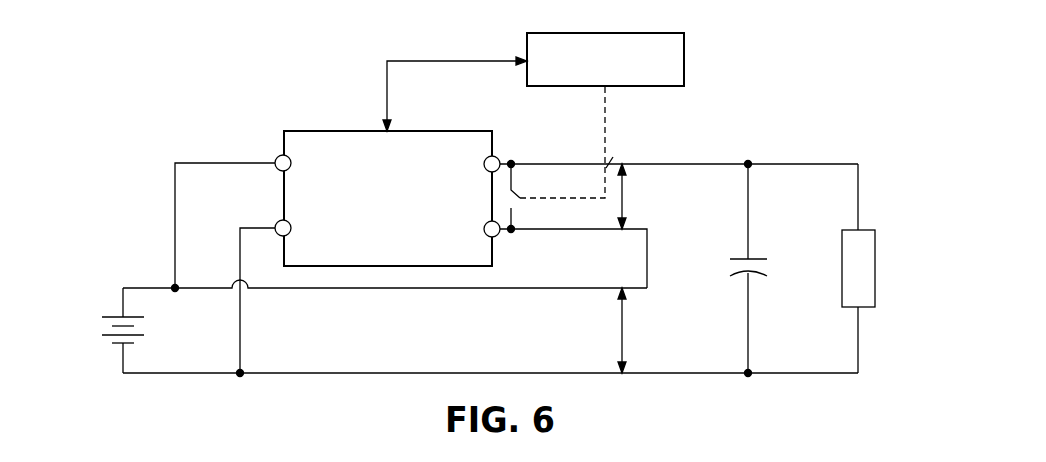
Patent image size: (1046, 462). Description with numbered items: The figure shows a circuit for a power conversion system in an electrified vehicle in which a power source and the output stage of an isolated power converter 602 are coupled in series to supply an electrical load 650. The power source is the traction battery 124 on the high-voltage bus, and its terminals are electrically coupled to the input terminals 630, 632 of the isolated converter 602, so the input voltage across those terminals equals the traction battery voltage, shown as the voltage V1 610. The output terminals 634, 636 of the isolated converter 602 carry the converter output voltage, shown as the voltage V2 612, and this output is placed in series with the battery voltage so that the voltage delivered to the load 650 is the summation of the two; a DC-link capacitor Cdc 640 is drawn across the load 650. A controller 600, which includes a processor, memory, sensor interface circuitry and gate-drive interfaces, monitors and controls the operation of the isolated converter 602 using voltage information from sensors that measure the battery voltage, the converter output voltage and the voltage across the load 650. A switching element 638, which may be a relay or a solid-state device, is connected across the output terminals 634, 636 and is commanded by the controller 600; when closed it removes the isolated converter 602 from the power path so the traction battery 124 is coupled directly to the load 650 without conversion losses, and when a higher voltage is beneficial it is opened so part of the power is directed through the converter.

The traction battery 124 is at (114, 315).
The controller 600 is at (684, 70).
The isolated power converter 602 is at (337, 130).
The input voltage V1 610 is at (670, 334).
The output voltage V2 612 is at (670, 204).
The input terminal 630 is at (276, 157).
The input terminal 632 is at (276, 221).
The output terminal 634 is at (500, 157).
The output terminal 636 is at (500, 237).
The switching element 638 is at (513, 192).
The DC link capacitor Cdc 640 is at (757, 258).
The electrical load 650 is at (841, 268).